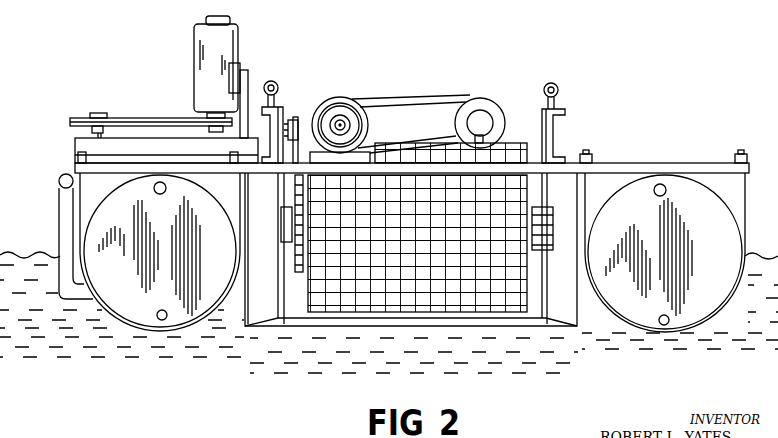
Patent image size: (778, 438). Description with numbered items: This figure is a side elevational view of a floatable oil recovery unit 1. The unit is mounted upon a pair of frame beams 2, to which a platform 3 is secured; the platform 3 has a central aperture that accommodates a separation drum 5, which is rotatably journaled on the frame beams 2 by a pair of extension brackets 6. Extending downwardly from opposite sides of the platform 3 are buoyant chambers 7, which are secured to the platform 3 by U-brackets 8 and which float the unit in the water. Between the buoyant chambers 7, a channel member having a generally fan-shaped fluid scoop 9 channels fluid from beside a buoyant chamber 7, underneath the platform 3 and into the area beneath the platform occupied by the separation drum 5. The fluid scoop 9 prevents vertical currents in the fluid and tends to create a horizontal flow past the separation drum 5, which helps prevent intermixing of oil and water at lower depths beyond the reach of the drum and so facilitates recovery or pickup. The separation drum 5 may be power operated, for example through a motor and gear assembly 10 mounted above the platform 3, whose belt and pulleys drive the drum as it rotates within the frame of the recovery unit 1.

The recovery unit 1 is at (594, 108).
The frame beams 2 is at (278, 104).
The platform 3 is at (623, 169).
The separation drum 5 is at (502, 266).
The extension brackets 6 is at (541, 150).
The buoyant chambers 7 is at (137, 308).
The U-brackets 8 is at (80, 199).
The fluid scoop 9 is at (262, 320).
The motor and gear assembly 10 is at (467, 95).